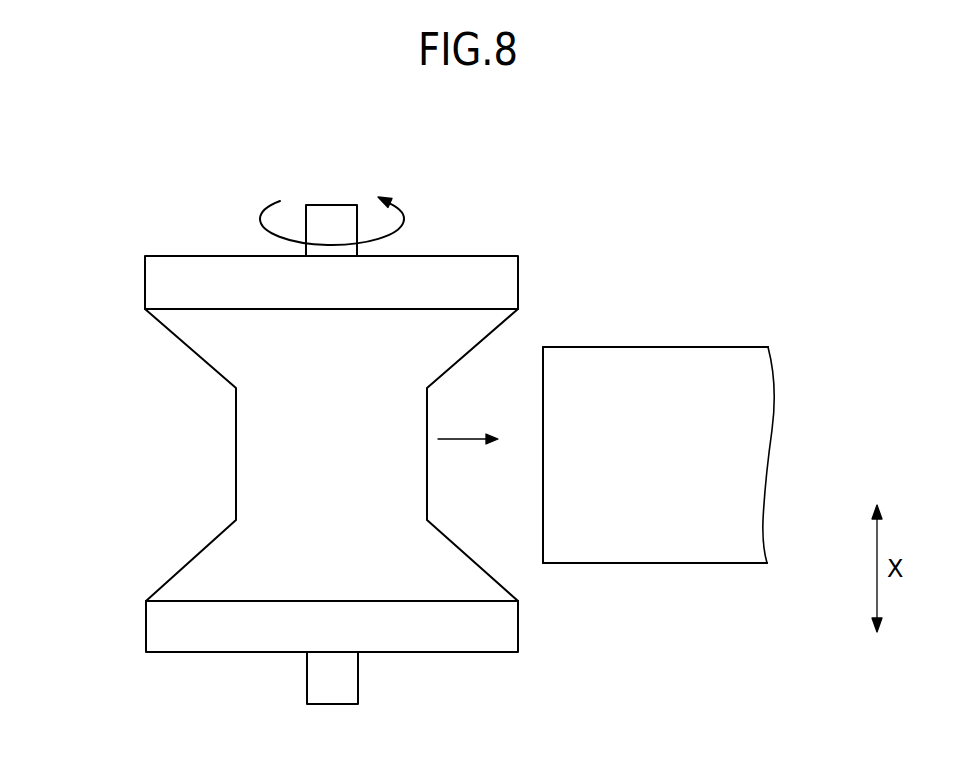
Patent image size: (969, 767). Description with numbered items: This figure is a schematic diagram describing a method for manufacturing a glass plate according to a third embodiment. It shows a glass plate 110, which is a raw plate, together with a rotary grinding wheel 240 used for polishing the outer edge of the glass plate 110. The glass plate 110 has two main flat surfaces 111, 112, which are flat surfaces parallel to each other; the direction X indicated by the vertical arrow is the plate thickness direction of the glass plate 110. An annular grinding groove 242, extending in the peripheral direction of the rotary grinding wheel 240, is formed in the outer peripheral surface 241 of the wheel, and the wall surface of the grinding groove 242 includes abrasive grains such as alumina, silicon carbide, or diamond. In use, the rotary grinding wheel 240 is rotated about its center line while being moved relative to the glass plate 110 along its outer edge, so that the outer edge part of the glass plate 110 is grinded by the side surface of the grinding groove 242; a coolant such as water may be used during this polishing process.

The rotary grinding wheel 240 is at (277, 450).
The outer peripheral surface 241 is at (145, 624).
The grinding groove 242 is at (196, 354).
The glass plate 110 is at (697, 454).
The main flat surface 111 is at (648, 346).
The main flat surface 112 is at (647, 564).